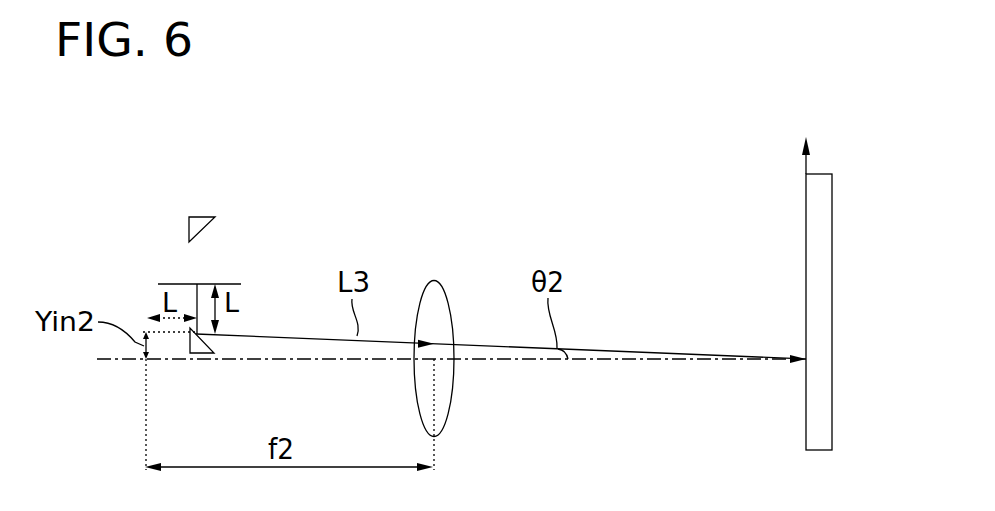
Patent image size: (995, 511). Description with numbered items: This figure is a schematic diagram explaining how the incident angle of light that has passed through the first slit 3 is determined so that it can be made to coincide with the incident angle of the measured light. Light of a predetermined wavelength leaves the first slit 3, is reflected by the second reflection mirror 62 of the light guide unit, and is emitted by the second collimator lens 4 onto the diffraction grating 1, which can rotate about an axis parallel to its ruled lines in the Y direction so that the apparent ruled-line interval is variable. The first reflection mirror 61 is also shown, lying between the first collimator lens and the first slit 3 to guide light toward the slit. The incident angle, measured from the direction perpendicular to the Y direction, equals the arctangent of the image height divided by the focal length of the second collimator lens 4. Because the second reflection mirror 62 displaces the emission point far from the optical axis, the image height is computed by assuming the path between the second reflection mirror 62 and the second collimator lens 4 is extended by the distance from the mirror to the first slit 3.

The diffraction grating 1 is at (832, 197).
The first slit 3 is at (225, 284).
The second collimator lens 4 is at (453, 308).
The first reflection mirror 61 is at (204, 215).
The second reflection mirror 62 is at (201, 355).